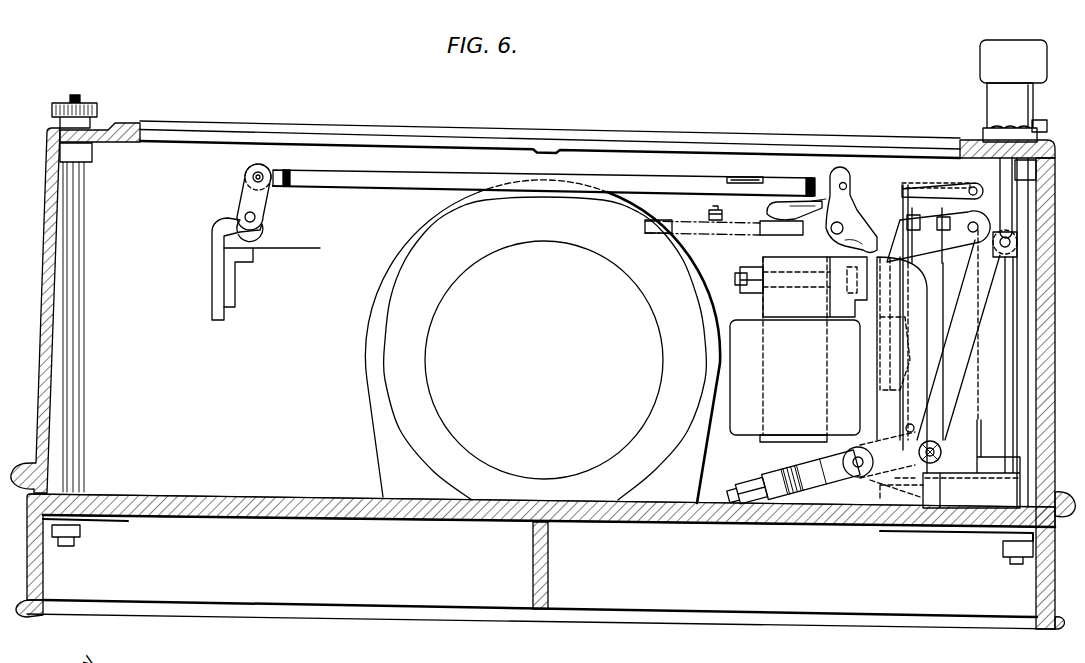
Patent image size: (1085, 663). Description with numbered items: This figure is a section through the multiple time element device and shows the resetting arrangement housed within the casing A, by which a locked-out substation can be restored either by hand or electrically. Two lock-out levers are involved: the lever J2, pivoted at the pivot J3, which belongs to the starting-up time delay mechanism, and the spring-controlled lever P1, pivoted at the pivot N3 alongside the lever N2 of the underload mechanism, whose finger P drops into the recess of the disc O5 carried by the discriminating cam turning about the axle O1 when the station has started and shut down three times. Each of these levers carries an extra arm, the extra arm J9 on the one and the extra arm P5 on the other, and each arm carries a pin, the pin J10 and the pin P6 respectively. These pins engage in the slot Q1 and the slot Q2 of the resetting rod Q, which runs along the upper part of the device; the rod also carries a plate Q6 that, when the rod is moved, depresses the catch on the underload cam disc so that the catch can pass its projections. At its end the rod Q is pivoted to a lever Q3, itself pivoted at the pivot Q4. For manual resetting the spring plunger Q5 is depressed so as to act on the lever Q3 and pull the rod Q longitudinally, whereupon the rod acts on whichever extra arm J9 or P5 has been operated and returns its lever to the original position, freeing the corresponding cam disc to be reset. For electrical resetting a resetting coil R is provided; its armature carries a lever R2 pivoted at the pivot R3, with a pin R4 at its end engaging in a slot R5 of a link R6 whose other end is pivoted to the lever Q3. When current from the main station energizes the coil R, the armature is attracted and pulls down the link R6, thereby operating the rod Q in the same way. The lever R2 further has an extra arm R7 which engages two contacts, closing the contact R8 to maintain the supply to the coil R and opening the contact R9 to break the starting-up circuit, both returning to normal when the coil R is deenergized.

The casing A is at (398, 359).
The resetting rod Q is at (388, 175).
The slot Q1 is at (261, 178).
The pin J10 is at (258, 172).
The extra arm J9 is at (245, 198).
The pivot J3 is at (264, 217).
The lever J2 is at (220, 274).
The disc O5 is at (672, 221).
The axle O1 is at (715, 207).
The plate Q6 is at (746, 177).
The finger P is at (768, 212).
The spring-controlled lever P1 is at (793, 210).
The pivot N3 is at (818, 199).
The pin P6 is at (843, 182).
The extra arm P5 is at (836, 221).
The slot Q2 is at (857, 232).
The lever N2 is at (877, 258).
The contact R9 is at (903, 215).
The contact R8 is at (942, 215).
The pivot Q4 is at (973, 186).
The lever Q3 is at (998, 190).
The spring plunger Q5 is at (1005, 100).
The link R6 is at (983, 327).
The resetting coil R is at (735, 370).
The extra arm R7 is at (887, 363).
The lever R2 is at (817, 490).
The pivot R3 is at (858, 478).
The pin R4 is at (938, 467).
The slot R5 is at (923, 475).